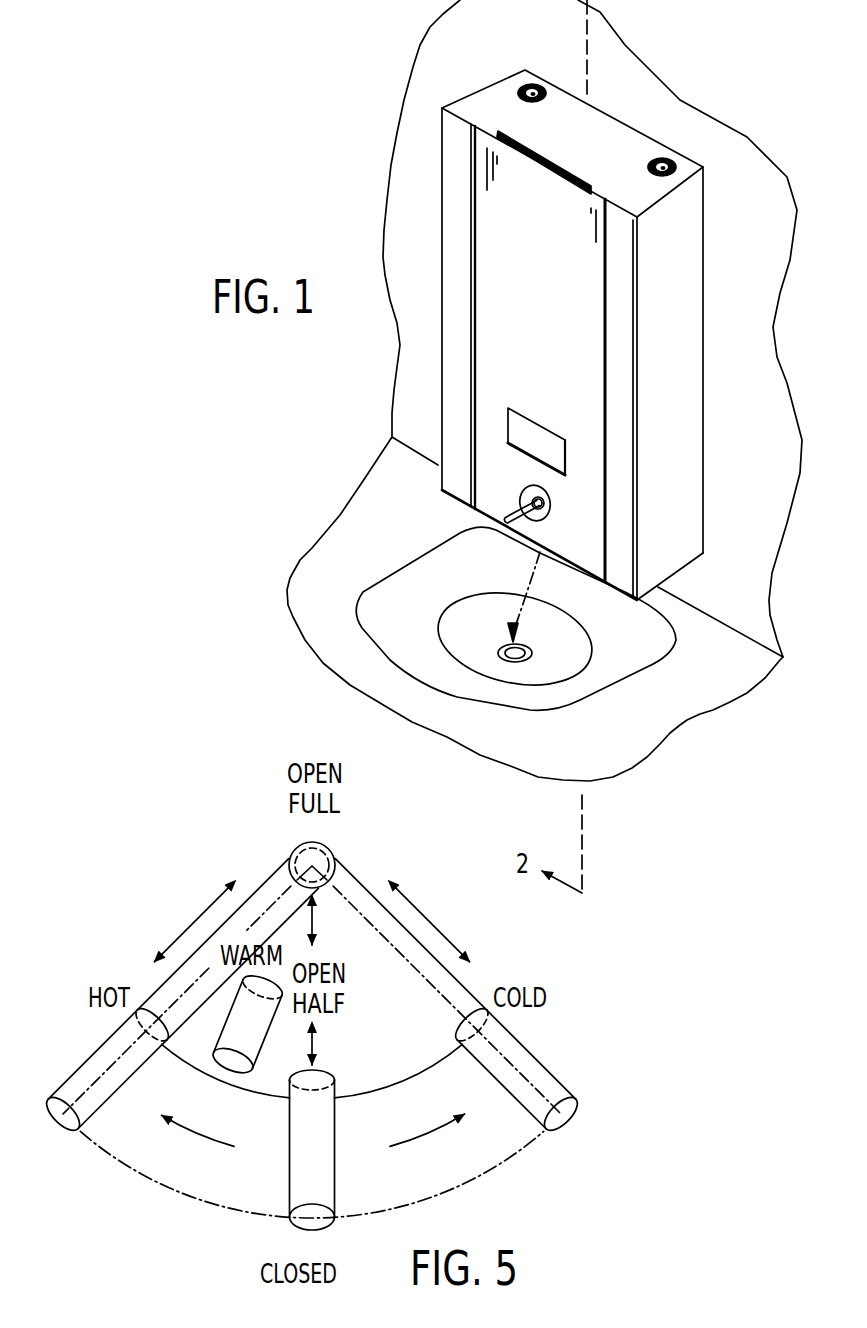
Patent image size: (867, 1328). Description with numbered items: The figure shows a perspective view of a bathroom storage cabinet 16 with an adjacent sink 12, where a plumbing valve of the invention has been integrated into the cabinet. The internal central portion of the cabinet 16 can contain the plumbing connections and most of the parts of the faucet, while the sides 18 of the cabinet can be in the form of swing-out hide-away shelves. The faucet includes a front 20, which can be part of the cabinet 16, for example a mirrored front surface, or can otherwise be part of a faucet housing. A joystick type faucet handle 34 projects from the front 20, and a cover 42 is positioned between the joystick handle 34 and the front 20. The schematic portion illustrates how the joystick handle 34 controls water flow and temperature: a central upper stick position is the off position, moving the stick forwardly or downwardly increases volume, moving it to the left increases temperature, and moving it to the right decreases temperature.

In FIG. 1, the sink 12 is at (407, 570).
In FIG. 1, the cabinet 16 is at (622, 142).
In FIG. 1, the sides 18 is at (455, 183).
In FIG. 1, the front 20 is at (487, 420).
In FIG. 1, the joystick type faucet handle 34 is at (540, 519).
In FIG. 5, the joystick type faucet handle 34 is at (556, 1074).
In FIG. 1, the cover 42 is at (540, 519).